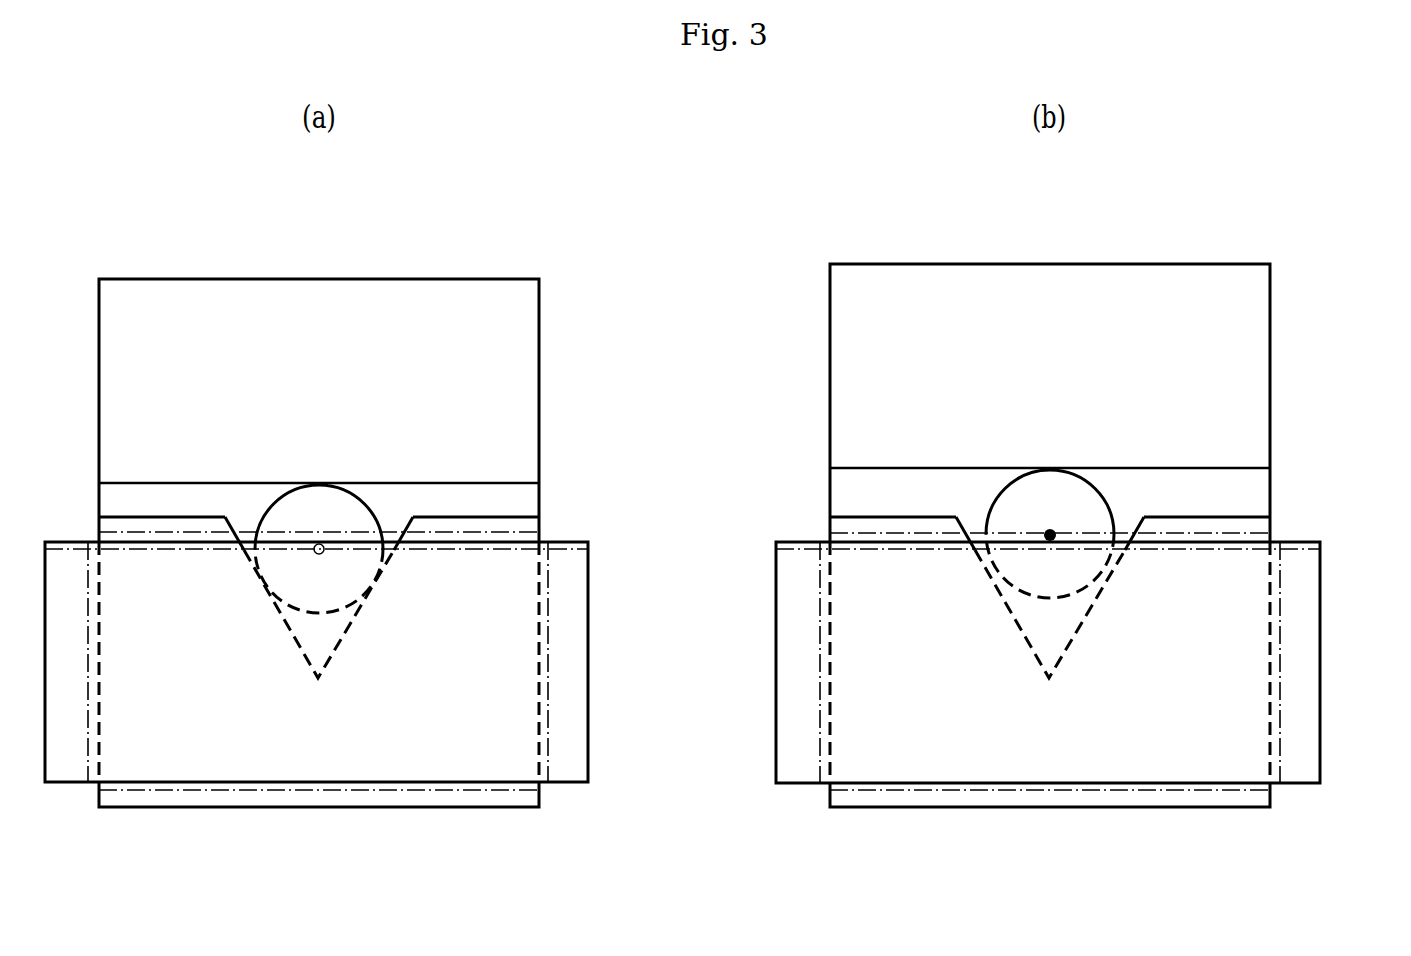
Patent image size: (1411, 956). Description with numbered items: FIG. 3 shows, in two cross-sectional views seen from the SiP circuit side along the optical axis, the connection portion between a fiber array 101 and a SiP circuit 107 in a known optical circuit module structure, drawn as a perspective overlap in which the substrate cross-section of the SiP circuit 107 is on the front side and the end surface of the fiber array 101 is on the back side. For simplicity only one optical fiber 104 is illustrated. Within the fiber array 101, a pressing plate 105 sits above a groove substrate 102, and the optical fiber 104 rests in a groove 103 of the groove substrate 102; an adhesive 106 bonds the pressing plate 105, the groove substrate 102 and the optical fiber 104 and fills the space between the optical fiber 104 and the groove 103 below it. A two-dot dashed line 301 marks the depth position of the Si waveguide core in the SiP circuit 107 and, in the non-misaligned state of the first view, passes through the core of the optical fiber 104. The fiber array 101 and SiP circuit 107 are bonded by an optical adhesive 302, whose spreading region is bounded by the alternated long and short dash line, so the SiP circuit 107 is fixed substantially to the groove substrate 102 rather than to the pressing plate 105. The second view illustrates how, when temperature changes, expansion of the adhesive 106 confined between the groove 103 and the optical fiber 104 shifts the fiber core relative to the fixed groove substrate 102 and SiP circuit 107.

The fiber array 101 is at (485, 262).
The groove substrate 102 is at (317, 797).
The groove 103 is at (345, 630).
The optical fiber 104 is at (342, 511).
The pressing plate 105 is at (525, 397).
The adhesive 106 is at (525, 498).
The SiP circuit 107 is at (588, 687).
The two-dot dashed line 301 is at (558, 548).
The optical adhesive 302 is at (548, 627).